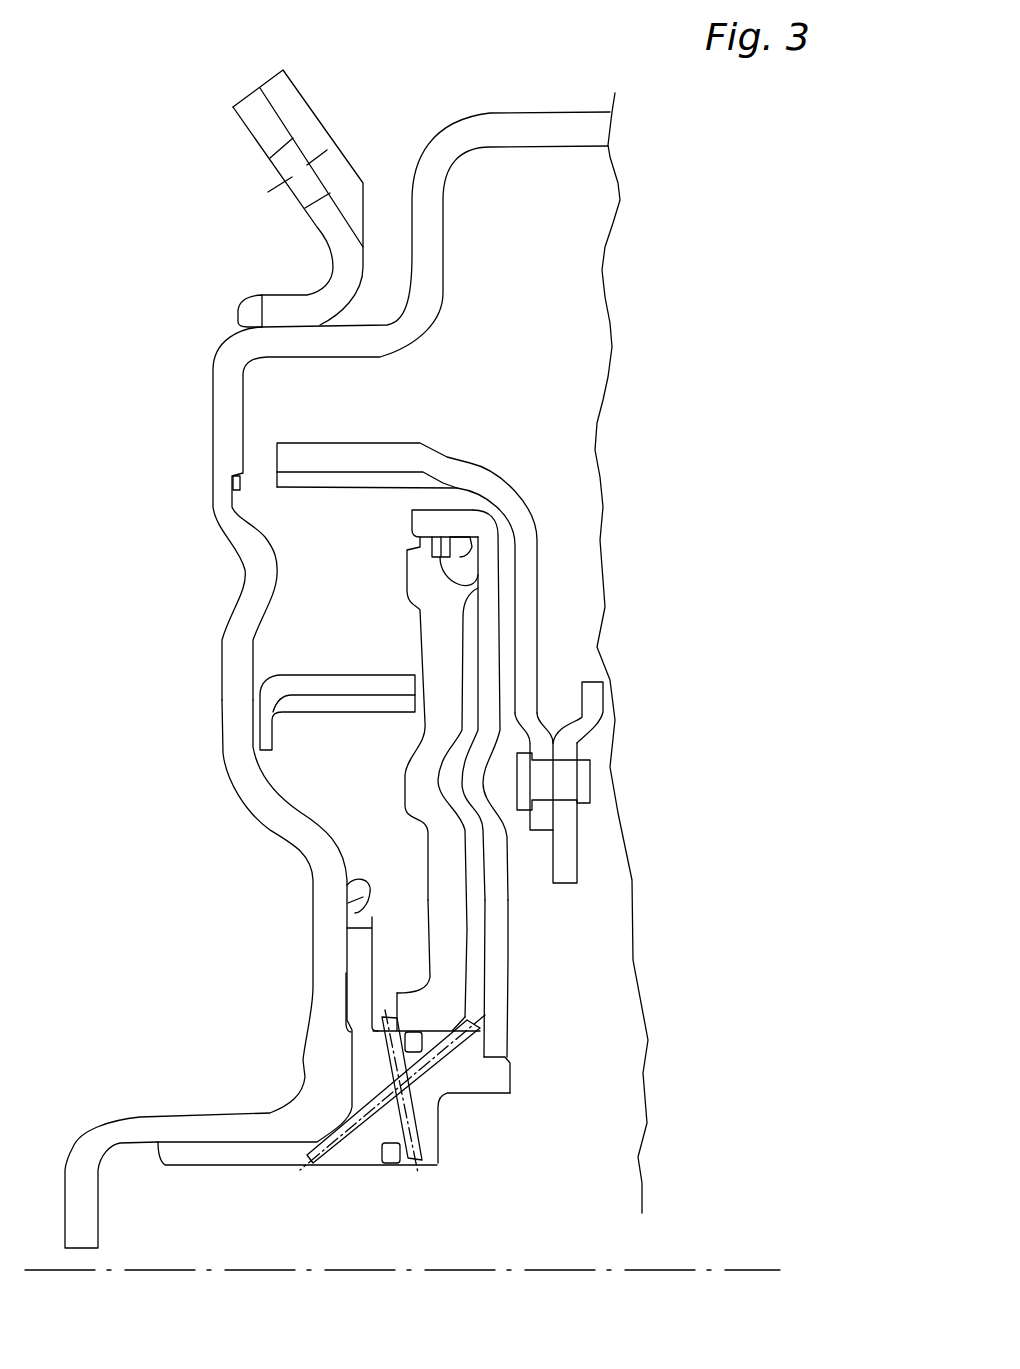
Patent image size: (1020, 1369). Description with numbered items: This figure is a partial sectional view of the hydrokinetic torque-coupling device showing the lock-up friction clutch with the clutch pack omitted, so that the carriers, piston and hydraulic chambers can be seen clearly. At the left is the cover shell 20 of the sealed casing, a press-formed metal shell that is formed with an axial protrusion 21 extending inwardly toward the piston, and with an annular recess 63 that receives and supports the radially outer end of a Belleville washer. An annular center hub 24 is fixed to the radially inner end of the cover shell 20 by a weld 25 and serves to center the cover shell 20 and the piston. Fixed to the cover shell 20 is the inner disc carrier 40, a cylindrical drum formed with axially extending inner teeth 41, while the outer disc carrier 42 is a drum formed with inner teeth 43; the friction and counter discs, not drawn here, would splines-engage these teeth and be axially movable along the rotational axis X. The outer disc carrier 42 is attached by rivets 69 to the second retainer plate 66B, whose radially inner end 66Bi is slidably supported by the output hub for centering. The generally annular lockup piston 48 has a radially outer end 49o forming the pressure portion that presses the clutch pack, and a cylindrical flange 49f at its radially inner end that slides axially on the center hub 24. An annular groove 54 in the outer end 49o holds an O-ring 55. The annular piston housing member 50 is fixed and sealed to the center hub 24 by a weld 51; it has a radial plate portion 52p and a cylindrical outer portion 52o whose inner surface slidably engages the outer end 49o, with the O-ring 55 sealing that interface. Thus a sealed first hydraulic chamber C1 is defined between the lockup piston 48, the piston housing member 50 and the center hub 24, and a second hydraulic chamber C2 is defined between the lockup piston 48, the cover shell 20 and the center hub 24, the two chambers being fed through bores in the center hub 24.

The first shell (cover shell) 20 is at (277, 818).
The axial protrusion 21 is at (258, 577).
The center hub 24 is at (462, 1082).
The weld 25 is at (348, 888).
The inner disc carrier 40 is at (338, 705).
The inner teeth 41 is at (333, 680).
The outer disc carrier 42 is at (340, 450).
The inner teeth 43 is at (317, 482).
The lockup piston 48 is at (440, 877).
The radially outer end (pressure portion) 49o is at (418, 570).
The cylindrical flange 49f is at (412, 1012).
The piston housing member 50 is at (507, 960).
The weld 51 is at (513, 1060).
The cylindrical outer portion 52o is at (442, 518).
The radial plate portion 52p is at (490, 698).
The annular groove 54 is at (480, 582).
The O-ring 55 is at (459, 571).
The annular recess 63 is at (237, 497).
The second retainer plate 66B is at (590, 705).
The radially inner end of second retainer plate 66Bi is at (567, 863).
The rivets 69 is at (563, 782).
The first hydraulic chamber C1 is at (470, 663).
The second hydraulic chamber C2 is at (393, 948).
The rotational axis X is at (440, 1272).